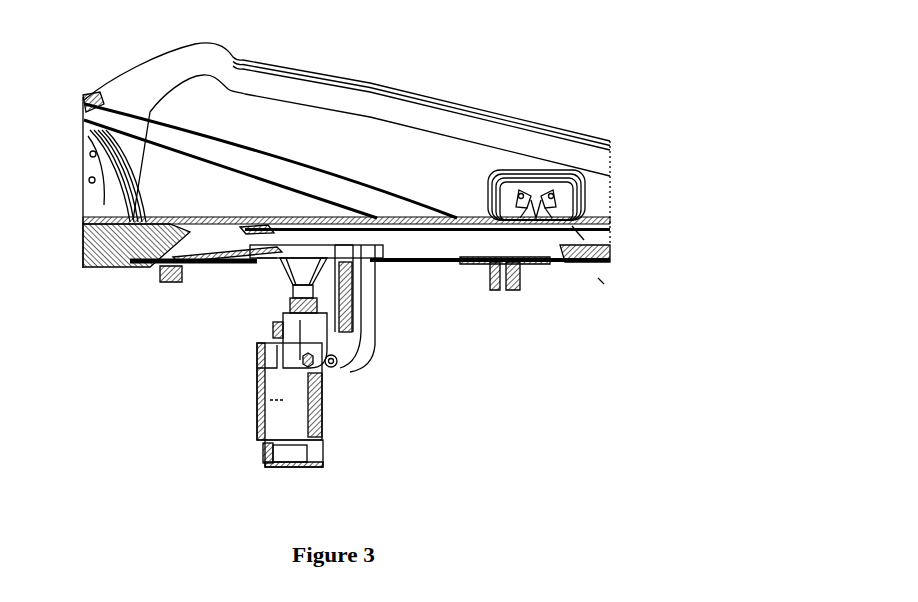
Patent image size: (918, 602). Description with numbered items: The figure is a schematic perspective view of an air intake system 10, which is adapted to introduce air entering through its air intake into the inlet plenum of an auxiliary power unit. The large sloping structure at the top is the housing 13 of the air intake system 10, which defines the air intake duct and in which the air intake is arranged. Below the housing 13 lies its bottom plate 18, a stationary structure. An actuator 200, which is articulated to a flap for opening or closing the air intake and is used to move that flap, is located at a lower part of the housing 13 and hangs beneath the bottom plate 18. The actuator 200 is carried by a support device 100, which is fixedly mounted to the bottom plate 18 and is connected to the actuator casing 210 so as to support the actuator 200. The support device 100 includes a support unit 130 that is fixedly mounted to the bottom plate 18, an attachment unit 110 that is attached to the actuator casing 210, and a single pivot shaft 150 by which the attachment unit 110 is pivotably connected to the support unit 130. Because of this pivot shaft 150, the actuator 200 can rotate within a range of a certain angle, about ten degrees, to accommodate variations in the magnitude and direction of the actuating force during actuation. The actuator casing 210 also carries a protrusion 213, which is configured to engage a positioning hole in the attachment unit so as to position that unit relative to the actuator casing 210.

The air intake system 10 is at (520, 281).
The housing 13 is at (380, 150).
The bottom plate 18 is at (165, 282).
The support device 100 is at (325, 324).
The attachment unit 110 is at (297, 333).
The support unit 130 is at (371, 279).
The pivot shaft 150 is at (337, 364).
The actuator 200 is at (299, 414).
The actuator casing 210 is at (283, 402).
The protrusion 213 is at (303, 360).